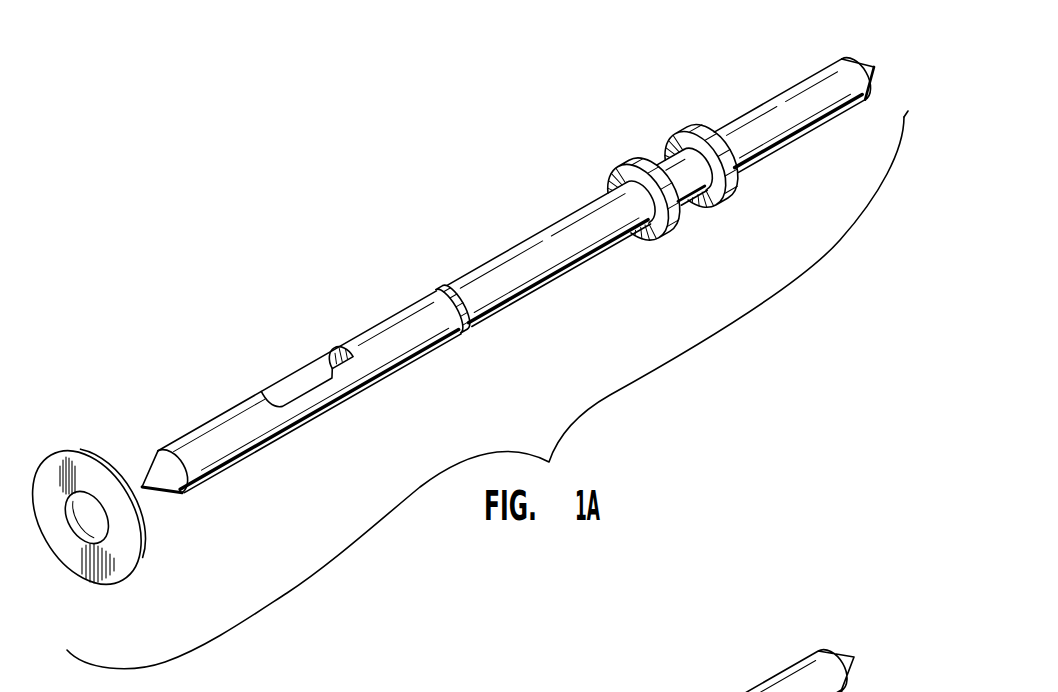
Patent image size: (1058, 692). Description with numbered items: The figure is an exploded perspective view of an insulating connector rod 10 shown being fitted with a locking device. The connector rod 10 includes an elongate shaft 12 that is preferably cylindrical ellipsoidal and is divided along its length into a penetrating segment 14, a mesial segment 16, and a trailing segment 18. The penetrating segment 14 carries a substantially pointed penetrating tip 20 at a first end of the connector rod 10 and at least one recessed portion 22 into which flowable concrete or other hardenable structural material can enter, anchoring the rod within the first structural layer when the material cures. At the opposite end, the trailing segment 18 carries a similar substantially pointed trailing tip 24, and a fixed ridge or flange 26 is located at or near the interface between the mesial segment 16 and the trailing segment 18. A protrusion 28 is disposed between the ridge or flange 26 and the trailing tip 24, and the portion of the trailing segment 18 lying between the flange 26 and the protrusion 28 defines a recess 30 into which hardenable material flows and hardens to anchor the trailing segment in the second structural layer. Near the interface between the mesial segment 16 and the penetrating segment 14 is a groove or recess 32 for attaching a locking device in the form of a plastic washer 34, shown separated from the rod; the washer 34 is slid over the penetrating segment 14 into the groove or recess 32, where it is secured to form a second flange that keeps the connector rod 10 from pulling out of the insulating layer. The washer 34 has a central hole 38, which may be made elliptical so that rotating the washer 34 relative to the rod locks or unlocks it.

The connector rod 10 is at (460, 327).
The elongate shaft 12 is at (520, 282).
The penetrating segment 14 is at (269, 349).
The mesial segment 16 is at (580, 228).
The trailing segment 18 is at (813, 165).
The penetrating tip 20 is at (165, 495).
The recessed portion 22 is at (349, 366).
The trailing tip 24 is at (873, 63).
The ridge or flange 26 is at (638, 172).
The protrusion 28 is at (710, 128).
The recess 30 is at (689, 184).
The groove or recess 32 is at (443, 292).
The plastic washer 34 is at (89, 515).
The hole 38 is at (90, 530).